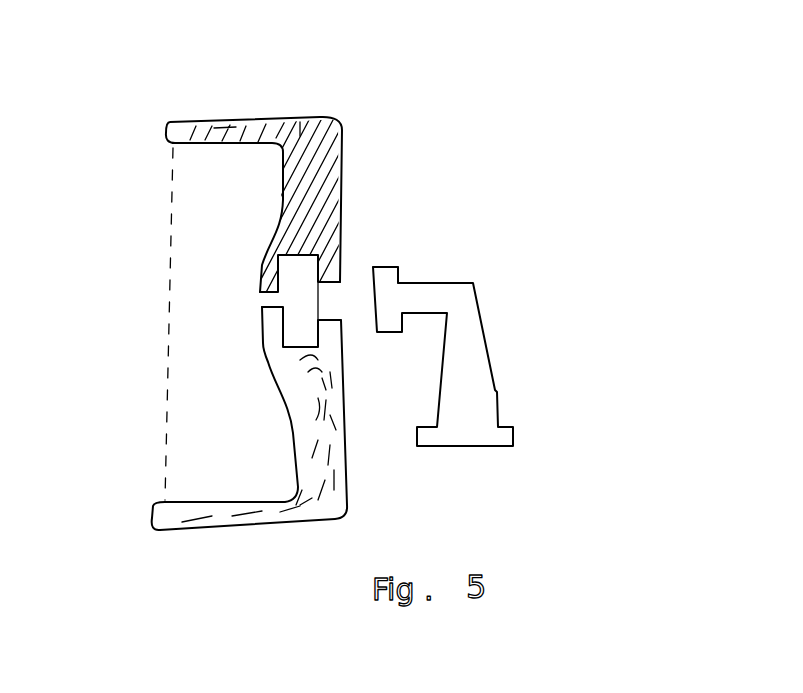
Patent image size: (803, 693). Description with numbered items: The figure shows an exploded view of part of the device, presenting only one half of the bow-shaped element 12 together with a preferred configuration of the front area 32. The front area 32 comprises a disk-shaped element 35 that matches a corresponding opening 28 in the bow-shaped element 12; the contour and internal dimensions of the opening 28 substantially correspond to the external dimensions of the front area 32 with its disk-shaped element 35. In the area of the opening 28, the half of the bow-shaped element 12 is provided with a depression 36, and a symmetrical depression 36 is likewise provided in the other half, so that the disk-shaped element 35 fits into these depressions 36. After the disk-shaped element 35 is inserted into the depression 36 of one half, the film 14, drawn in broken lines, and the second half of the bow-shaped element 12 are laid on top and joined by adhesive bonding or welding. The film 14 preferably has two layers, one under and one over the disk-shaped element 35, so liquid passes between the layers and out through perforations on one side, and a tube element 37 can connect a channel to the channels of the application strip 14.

The bow-shaped element 12 is at (317, 143).
The film 14 is at (200, 415).
The opening 28 is at (357, 287).
The front area 32 is at (468, 365).
The disk-shaped element 35 is at (488, 202).
The depression 36 is at (310, 313).
The tube element 37 is at (268, 296).